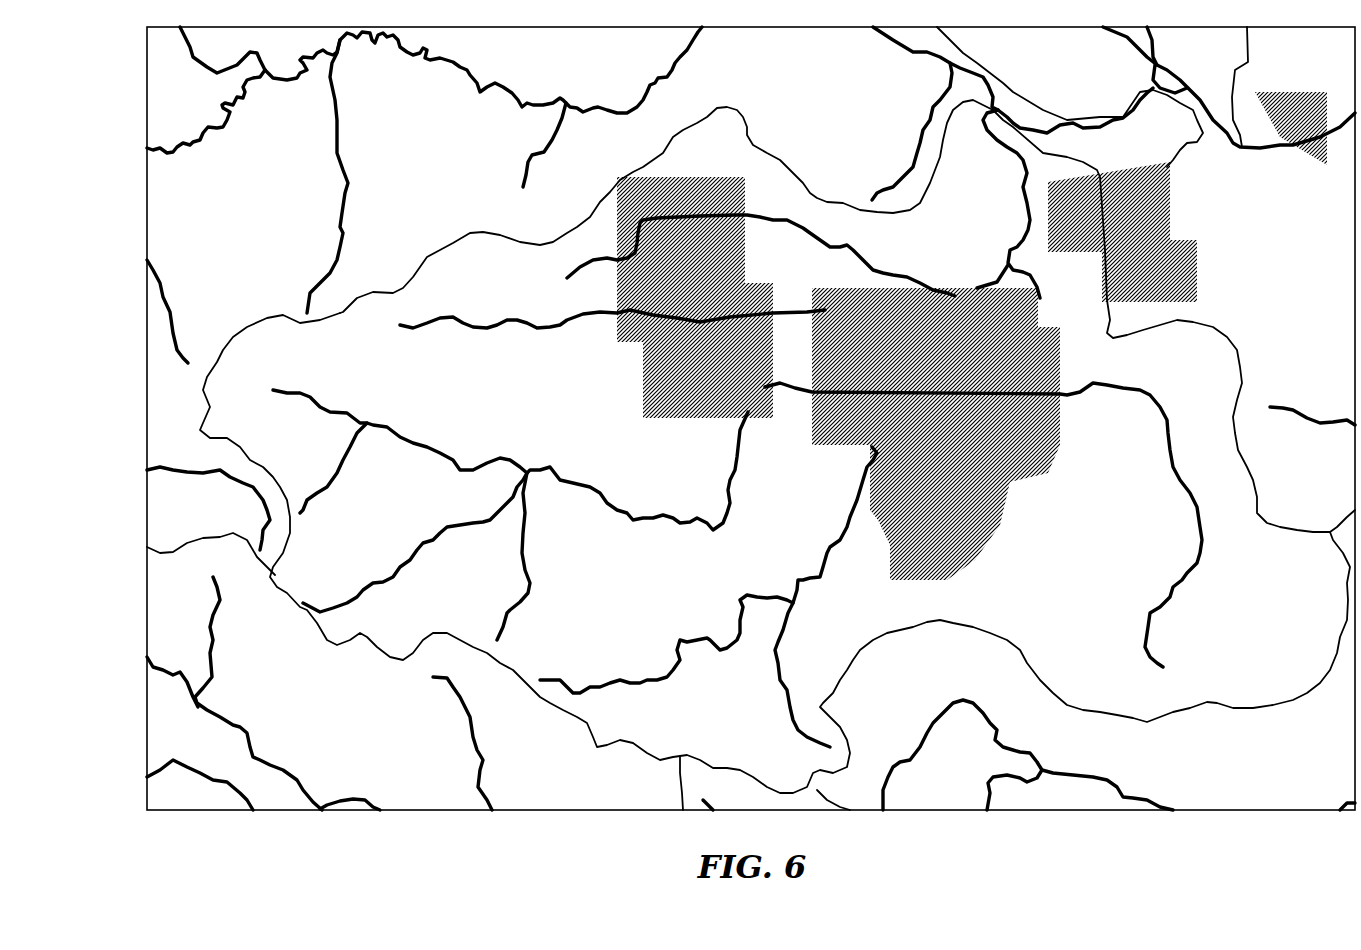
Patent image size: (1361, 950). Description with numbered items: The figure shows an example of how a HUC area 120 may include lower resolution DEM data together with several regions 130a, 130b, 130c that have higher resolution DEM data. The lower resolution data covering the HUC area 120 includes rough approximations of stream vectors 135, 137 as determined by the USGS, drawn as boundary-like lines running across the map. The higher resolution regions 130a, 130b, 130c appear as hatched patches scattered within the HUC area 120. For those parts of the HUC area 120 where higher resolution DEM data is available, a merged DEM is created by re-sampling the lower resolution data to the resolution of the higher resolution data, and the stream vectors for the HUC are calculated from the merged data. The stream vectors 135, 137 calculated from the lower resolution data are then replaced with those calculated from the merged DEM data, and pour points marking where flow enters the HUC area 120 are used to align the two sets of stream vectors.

The HUC area 120 is at (1107, 576).
The region having higher resolution DEM data 130a is at (658, 417).
The region having higher resolution DEM data 130b is at (955, 292).
The region having higher resolution DEM data 130c is at (1170, 220).
The stream vector 135 is at (697, 640).
The stream vector 137 is at (626, 512).